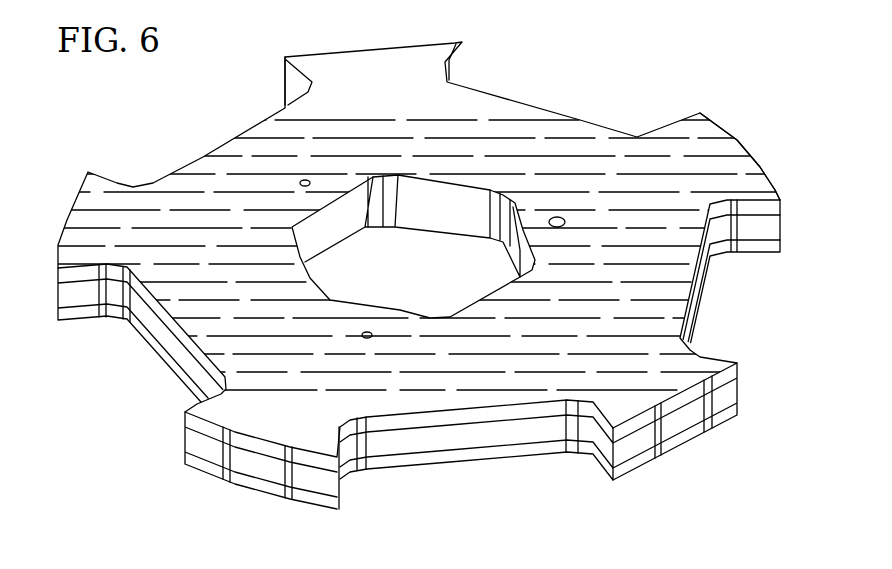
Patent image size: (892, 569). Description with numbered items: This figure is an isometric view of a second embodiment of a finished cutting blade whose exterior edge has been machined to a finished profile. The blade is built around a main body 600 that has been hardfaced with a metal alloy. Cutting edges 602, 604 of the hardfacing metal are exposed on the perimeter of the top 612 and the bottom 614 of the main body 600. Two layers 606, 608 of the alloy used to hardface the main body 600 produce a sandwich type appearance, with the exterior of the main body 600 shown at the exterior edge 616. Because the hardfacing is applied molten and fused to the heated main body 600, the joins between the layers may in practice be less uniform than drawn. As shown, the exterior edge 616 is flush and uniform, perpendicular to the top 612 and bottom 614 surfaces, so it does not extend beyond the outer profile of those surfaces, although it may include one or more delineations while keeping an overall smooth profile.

The main body 600 is at (419, 249).
The cutting edge 602 is at (760, 172).
The cutting edge 604 is at (757, 247).
The first layer of hardfacing alloy 606 is at (783, 207).
The second layer of hardfacing alloy 608 is at (781, 251).
The top surface 612 is at (503, 113).
The bottom surface 614 is at (490, 482).
The exterior edge 616 is at (728, 396).